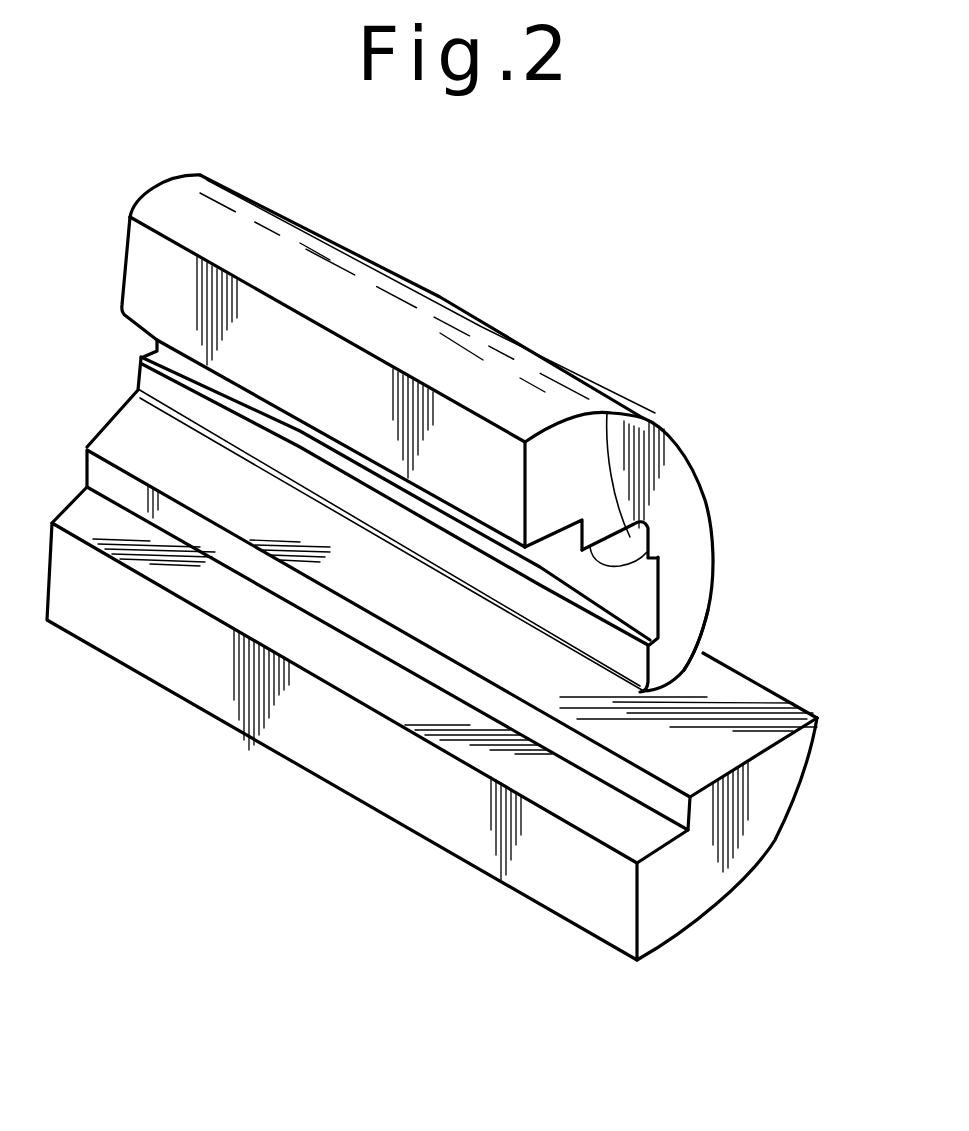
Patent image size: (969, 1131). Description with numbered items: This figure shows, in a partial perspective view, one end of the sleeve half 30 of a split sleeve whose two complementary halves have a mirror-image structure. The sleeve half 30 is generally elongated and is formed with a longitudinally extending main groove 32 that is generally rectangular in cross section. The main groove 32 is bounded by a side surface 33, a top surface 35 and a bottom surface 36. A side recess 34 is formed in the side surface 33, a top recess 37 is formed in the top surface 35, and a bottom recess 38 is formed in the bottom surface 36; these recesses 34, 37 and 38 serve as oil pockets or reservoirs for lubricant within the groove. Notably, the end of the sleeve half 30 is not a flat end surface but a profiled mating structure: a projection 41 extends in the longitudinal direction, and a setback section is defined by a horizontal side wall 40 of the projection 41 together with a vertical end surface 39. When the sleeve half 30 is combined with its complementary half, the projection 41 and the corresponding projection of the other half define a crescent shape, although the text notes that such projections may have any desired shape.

The sleeve half 30 is at (663, 442).
The main groove 32 is at (617, 563).
The side surface 33 is at (620, 532).
The side recess 34 is at (640, 603).
The top surface 35 is at (604, 538).
The bottom surface 36 is at (725, 773).
The top recess 37 is at (538, 538).
The bottom recess 38 is at (643, 842).
The vertical end surface 39 is at (700, 579).
The horizontal side wall 40 is at (453, 705).
The projection 41 is at (790, 765).